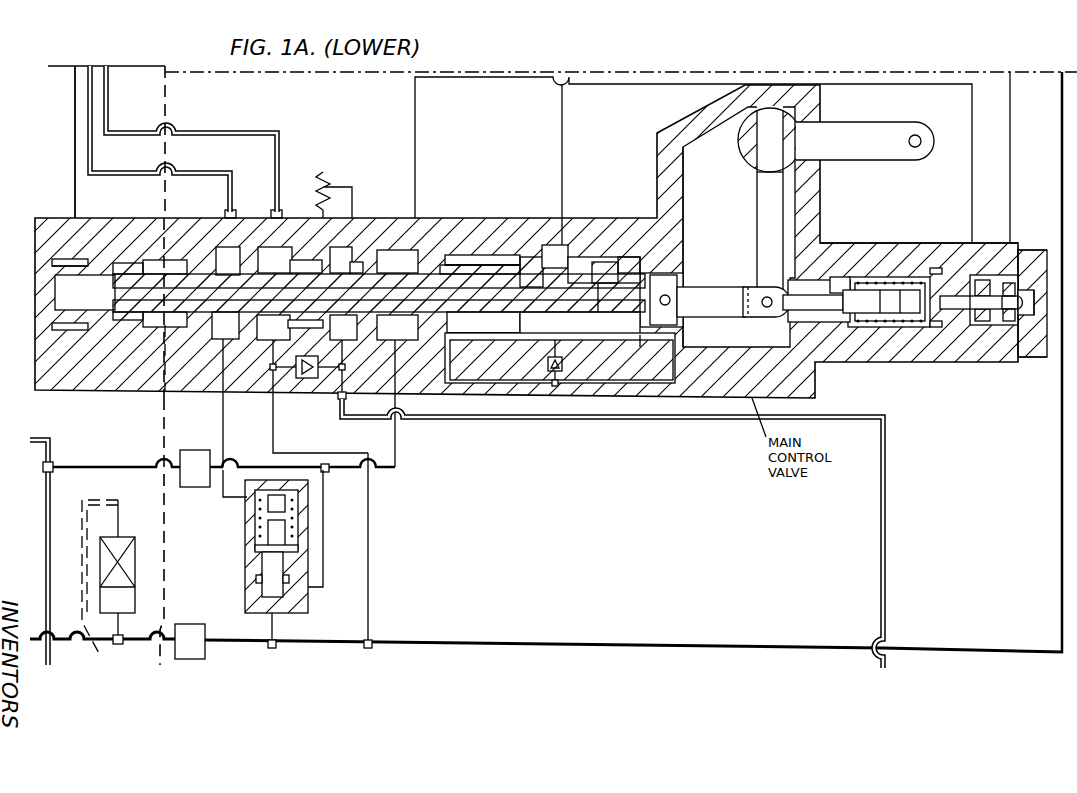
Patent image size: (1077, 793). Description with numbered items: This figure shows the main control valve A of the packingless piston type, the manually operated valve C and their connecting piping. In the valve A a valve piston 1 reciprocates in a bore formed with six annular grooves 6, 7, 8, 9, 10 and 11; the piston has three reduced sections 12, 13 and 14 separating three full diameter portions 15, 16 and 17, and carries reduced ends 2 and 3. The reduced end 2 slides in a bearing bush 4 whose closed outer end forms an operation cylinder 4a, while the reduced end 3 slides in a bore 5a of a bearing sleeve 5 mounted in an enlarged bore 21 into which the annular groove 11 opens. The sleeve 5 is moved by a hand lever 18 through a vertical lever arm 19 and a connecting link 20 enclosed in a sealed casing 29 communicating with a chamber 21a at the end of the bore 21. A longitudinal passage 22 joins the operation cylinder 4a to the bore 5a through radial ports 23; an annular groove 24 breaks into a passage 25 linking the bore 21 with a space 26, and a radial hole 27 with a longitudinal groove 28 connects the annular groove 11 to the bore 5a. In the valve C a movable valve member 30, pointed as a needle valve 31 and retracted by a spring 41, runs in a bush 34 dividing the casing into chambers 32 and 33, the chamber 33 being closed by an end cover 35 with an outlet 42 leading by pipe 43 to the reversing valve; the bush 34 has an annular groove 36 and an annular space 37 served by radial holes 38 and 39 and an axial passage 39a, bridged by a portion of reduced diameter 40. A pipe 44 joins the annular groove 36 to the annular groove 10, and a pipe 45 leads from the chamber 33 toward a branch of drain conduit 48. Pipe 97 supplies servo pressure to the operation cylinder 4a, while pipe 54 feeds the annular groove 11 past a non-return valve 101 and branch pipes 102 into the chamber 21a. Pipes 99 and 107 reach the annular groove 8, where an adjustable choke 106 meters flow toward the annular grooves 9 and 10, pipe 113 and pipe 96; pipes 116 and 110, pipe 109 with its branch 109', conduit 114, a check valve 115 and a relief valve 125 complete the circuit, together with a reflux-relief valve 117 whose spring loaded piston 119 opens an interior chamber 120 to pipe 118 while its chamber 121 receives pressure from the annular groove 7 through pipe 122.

The valve piston 1 is at (485, 397).
The reduced end 2 is at (124, 262).
The reduced end 3 is at (660, 302).
The bearing bush 4 is at (105, 313).
The operation cylinder 4a is at (62, 260).
The bearing sleeve 5 is at (525, 268).
The bore 5a is at (552, 248).
The annular groove 6 is at (185, 328).
The annular groove 7 is at (222, 252).
The annular groove 8 is at (228, 345).
The annular groove 9 is at (354, 258).
The annular groove 10 is at (405, 332).
The annular groove 11 is at (562, 240).
The reduced section 12 is at (140, 314).
The reduced section 13 is at (280, 255).
The reduced section 14 is at (345, 345).
The full diameter portion 15 is at (250, 262).
The full diameter portion 16 is at (290, 345).
The full diameter portion 17 is at (455, 265).
The hand lever 18 is at (862, 152).
The vertical lever arm 19 is at (760, 224).
The connecting link 20 is at (712, 294).
The bore 21 is at (503, 340).
The chamber 21a is at (472, 258).
The longitudinal passage 22 is at (395, 262).
The radial ports 23 is at (600, 262).
The annular groove 24 is at (620, 262).
The passage 25 is at (700, 370).
The space 26 is at (658, 278).
The radial hole 27 is at (666, 258).
The longitudinal groove 28 is at (590, 262).
The casing 29 is at (712, 140).
The movable valve member 30 is at (845, 316).
The needle valve 31 is at (1024, 262).
The chamber 32 is at (842, 280).
The chamber 33 is at (1012, 322).
The bush 34 is at (940, 270).
The end cover 35 is at (1024, 352).
The annular groove 36 is at (975, 322).
The annular space 37 is at (992, 280).
The radial holes 38 is at (960, 276).
The radial holes 39 is at (990, 324).
The axial passage 39a is at (972, 318).
The portion of reduced diameter 40 is at (1012, 250).
The spring 41 is at (905, 328).
The outlet 42 is at (1040, 358).
The pipe 43 is at (1061, 148).
The pipe 44 is at (474, 78).
The pipe 45 is at (1010, 110).
The branch of drain conduit 48 is at (172, 108).
The pipe 54 is at (563, 122).
The pipe 96 is at (52, 440).
The pipe 97 is at (73, 100).
The pipe 99 is at (662, 645).
The non-return valve 101 is at (565, 382).
The branch pipes 102 is at (470, 335).
The adjustable choke 106 is at (323, 175).
The pipe 107 is at (369, 555).
The pipe 109 is at (180, 441).
The branch of exhaust pipe 109' is at (111, 583).
The pipe 110 is at (105, 107).
The branch pipe 113 is at (244, 465).
The conduit 114 is at (884, 645).
The check valve 115 is at (308, 378).
The pipe 116 is at (92, 157).
The reflux-relief valve 117 is at (247, 526).
The pipe 118 is at (276, 626).
The spring loaded piston 119 is at (268, 562).
The interior chamber 120 is at (258, 584).
The chamber 121 is at (275, 517).
The pipe 122 is at (214, 433).
The relief valve 125 is at (120, 548).
The main control valve A is at (449, 262).
The valve C is at (866, 240).